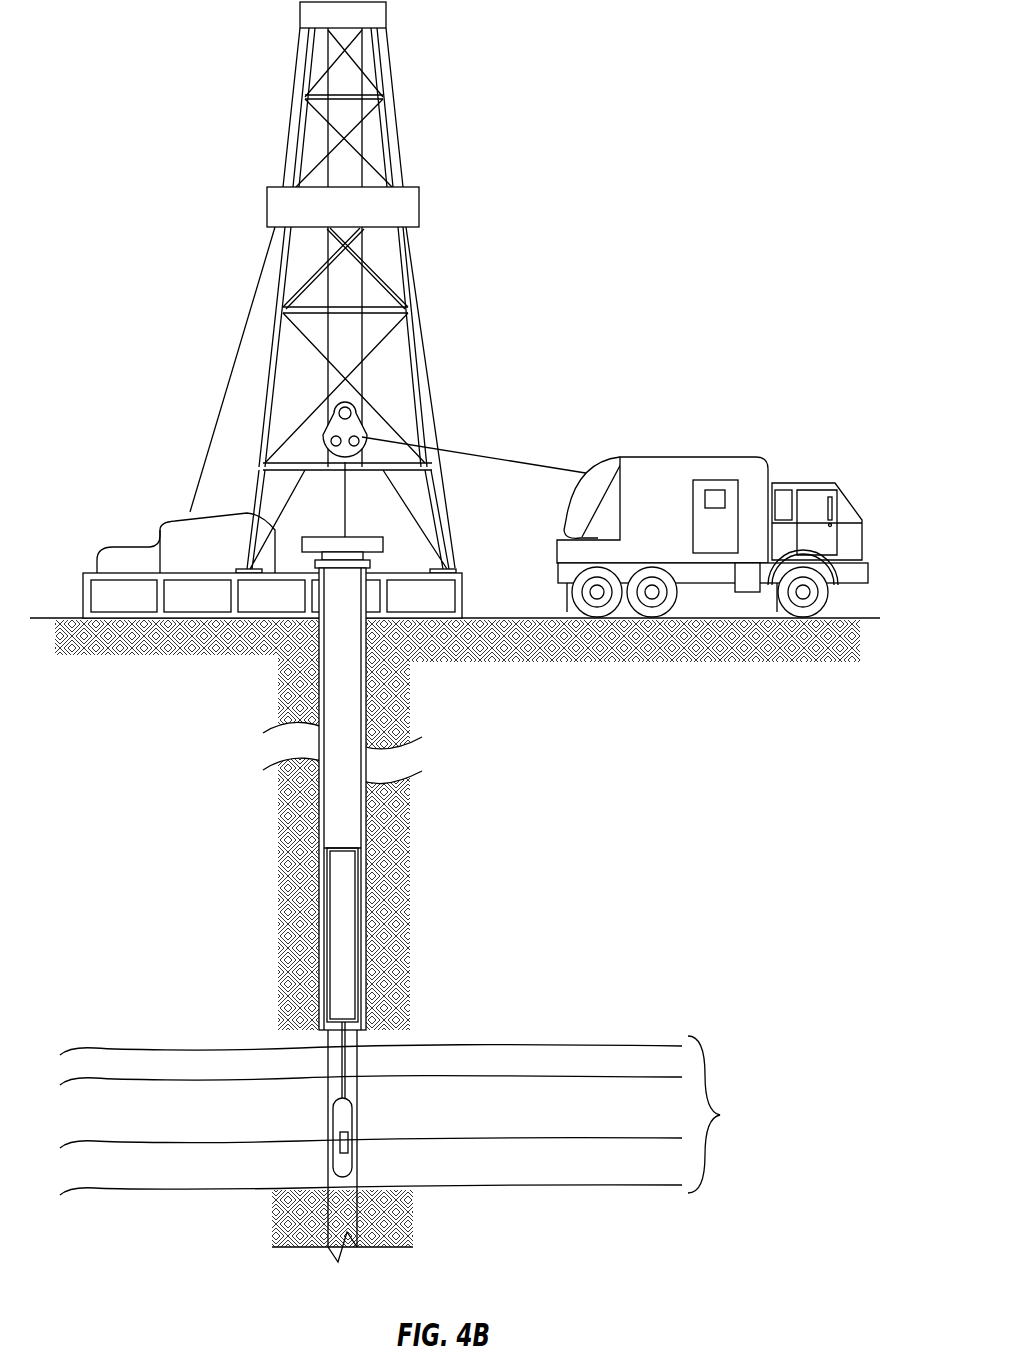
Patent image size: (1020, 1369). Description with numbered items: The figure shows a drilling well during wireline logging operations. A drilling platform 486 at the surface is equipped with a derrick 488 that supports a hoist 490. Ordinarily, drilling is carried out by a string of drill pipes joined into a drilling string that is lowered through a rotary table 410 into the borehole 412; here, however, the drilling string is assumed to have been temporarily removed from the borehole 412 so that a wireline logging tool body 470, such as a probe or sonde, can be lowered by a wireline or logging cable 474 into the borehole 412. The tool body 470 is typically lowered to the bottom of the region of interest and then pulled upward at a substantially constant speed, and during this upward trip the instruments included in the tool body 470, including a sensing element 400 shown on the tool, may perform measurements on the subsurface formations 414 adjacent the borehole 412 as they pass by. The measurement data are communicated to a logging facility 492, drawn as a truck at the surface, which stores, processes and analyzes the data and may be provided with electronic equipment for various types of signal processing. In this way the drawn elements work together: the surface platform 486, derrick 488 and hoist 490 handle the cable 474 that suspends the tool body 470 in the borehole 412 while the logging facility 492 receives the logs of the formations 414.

The sensor 400 is at (348, 1138).
The rotary table 410 is at (387, 541).
The borehole 412 is at (328, 1072).
The subsurface formations 414 is at (412, 1115).
The wireline logging tool body 470 is at (352, 1115).
The logging cable 474 is at (465, 447).
The drilling platform 486 is at (463, 585).
The derrick 488 is at (447, 555).
The hoist 490 is at (362, 418).
The logging facility 492 is at (654, 457).